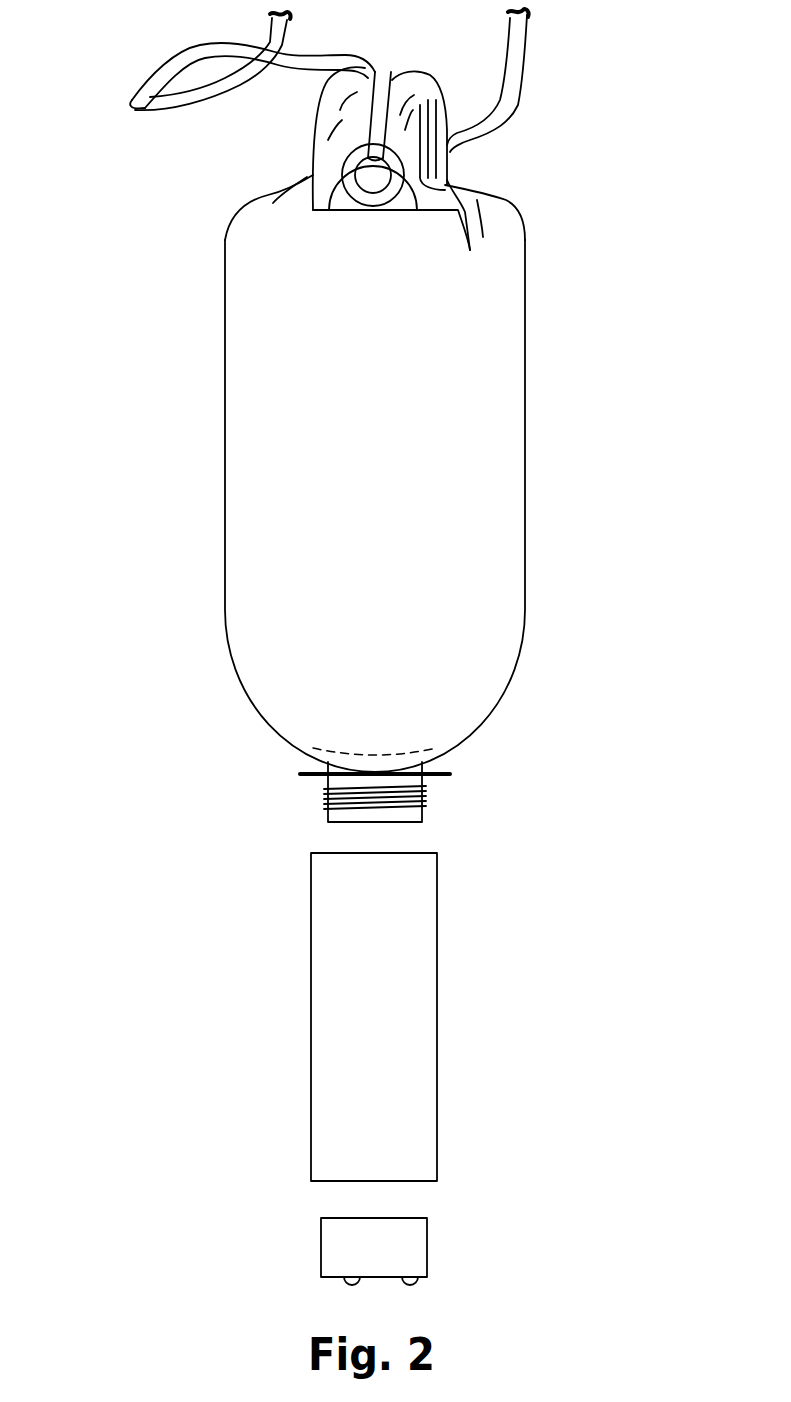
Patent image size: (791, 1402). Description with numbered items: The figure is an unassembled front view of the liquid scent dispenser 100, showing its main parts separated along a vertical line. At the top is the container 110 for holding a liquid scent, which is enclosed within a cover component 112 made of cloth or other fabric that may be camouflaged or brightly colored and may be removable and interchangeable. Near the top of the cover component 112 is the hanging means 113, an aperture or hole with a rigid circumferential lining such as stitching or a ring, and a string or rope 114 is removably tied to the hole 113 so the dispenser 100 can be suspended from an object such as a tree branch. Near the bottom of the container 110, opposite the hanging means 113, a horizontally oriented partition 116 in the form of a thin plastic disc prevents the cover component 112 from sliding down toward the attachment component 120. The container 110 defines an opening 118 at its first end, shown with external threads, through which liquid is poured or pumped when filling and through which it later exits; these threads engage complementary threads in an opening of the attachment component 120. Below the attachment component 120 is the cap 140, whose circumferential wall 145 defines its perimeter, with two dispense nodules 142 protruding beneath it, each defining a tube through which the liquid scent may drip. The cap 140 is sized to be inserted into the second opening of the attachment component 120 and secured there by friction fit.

The liquid scent dispenser 100 is at (617, 93).
The container 110 is at (390, 542).
The cover component 112 is at (492, 218).
The hanging means 113 is at (368, 176).
The string or rope 114 is at (137, 100).
The partition 116 is at (450, 774).
The opening 118 is at (422, 808).
The attachment component 120 is at (387, 986).
The cap 140 is at (448, 1245).
The dispense nodules 142 is at (352, 1282).
The circumferential wall 145 is at (387, 1257).